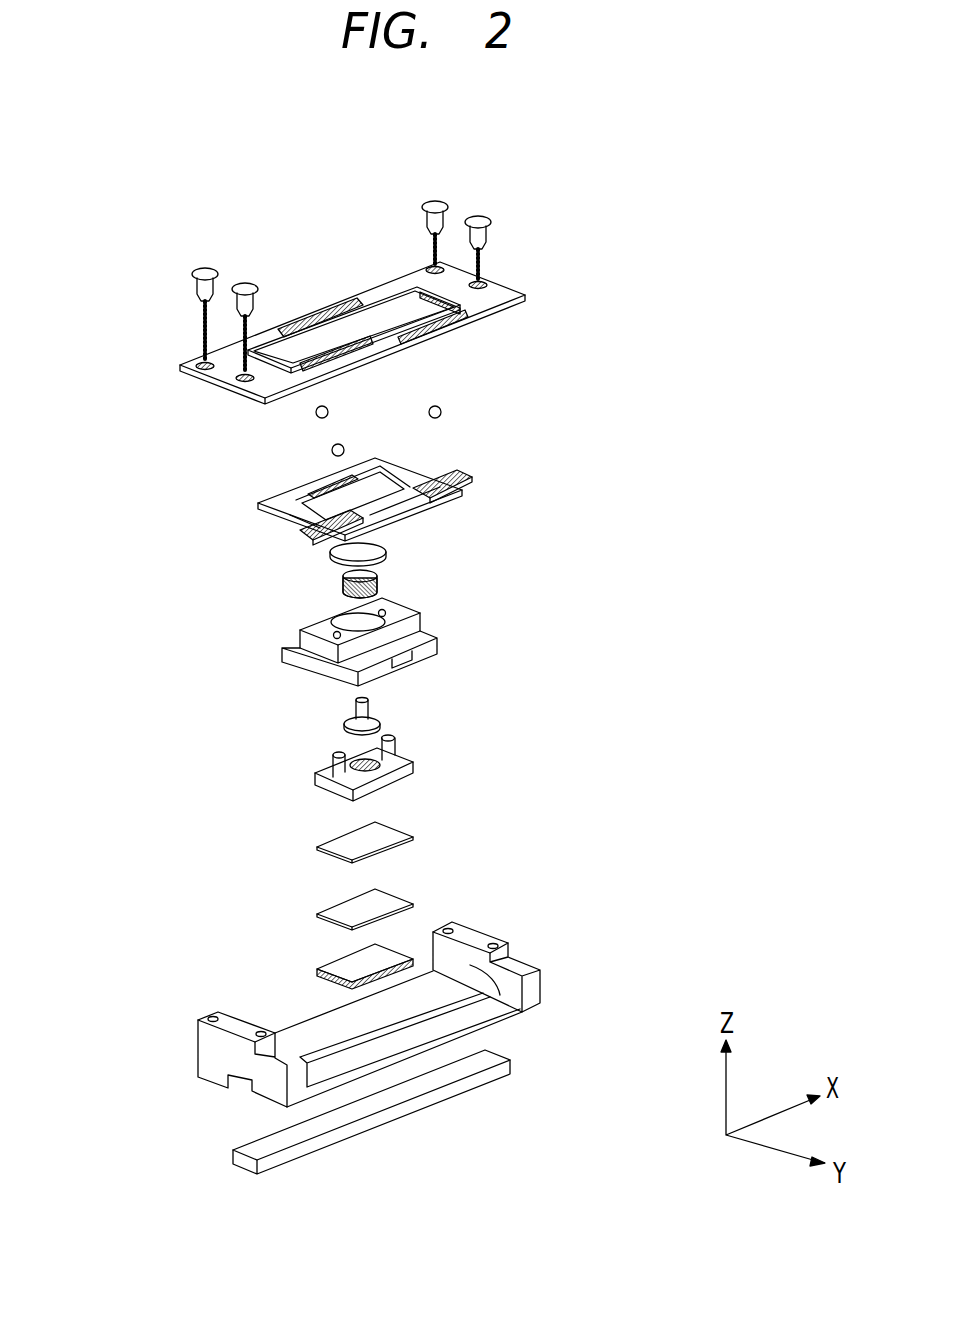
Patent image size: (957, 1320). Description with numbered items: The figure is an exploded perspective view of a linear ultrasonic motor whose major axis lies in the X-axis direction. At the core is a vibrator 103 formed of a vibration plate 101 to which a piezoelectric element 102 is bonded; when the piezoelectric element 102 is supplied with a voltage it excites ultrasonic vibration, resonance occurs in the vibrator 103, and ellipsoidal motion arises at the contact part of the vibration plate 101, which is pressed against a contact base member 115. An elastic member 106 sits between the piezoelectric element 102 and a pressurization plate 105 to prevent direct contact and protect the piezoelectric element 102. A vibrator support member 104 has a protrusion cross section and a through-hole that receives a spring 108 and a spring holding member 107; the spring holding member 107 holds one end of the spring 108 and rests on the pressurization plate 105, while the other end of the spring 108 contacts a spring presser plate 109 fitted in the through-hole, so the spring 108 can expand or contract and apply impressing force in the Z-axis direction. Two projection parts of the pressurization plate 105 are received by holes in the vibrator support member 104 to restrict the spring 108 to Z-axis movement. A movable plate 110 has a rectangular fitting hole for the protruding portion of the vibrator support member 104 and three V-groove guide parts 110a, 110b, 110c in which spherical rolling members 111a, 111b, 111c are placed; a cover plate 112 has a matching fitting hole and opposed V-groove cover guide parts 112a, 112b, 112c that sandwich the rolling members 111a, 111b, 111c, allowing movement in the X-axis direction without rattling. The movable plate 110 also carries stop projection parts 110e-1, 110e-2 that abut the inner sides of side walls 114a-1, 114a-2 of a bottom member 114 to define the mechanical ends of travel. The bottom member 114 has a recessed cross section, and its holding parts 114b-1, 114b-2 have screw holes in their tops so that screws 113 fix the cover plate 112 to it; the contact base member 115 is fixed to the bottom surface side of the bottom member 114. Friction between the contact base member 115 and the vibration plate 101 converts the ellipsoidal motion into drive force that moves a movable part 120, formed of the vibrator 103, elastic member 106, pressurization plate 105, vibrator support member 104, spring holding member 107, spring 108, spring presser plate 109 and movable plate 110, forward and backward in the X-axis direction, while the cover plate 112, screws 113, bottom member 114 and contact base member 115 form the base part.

The vibration plate 101 is at (325, 966).
The piezoelectric element 102 is at (317, 914).
The vibrator 103 is at (293, 938).
The vibrator support member 104 is at (282, 652).
The pressurization plate 105 is at (315, 778).
The elastic member 106 is at (317, 847).
The spring holding member 107 is at (347, 724).
The spring 108 is at (378, 585).
The spring presser plate 109 is at (388, 553).
The movable plate 110 is at (375, 501).
The V-groove guide part 110a is at (455, 495).
The V-groove guide part 110b is at (310, 530).
The V-groove guide part 110c is at (312, 482).
The stop projection part 110e-1 is at (425, 458).
The stop projection part 110e-2 is at (298, 530).
The rolling member 111a is at (441, 407).
The rolling member 111b is at (345, 449).
The rolling member 111c is at (315, 413).
The cover plate 112 is at (522, 291).
The V-groove cover guide part 112a is at (467, 320).
The V-groove cover guide part 112b is at (372, 347).
The V-groove cover guide part 112c is at (312, 317).
The screws 113 is at (176, 247).
The bottom member 114 is at (380, 983).
The side wall 114a-1 is at (527, 988).
The side wall 114a-2 is at (207, 1068).
The holding part 114b-1 is at (487, 929).
The holding part 114b-2 is at (236, 1020).
The contact base member 115 is at (512, 1068).
The movable part 120 is at (153, 445).